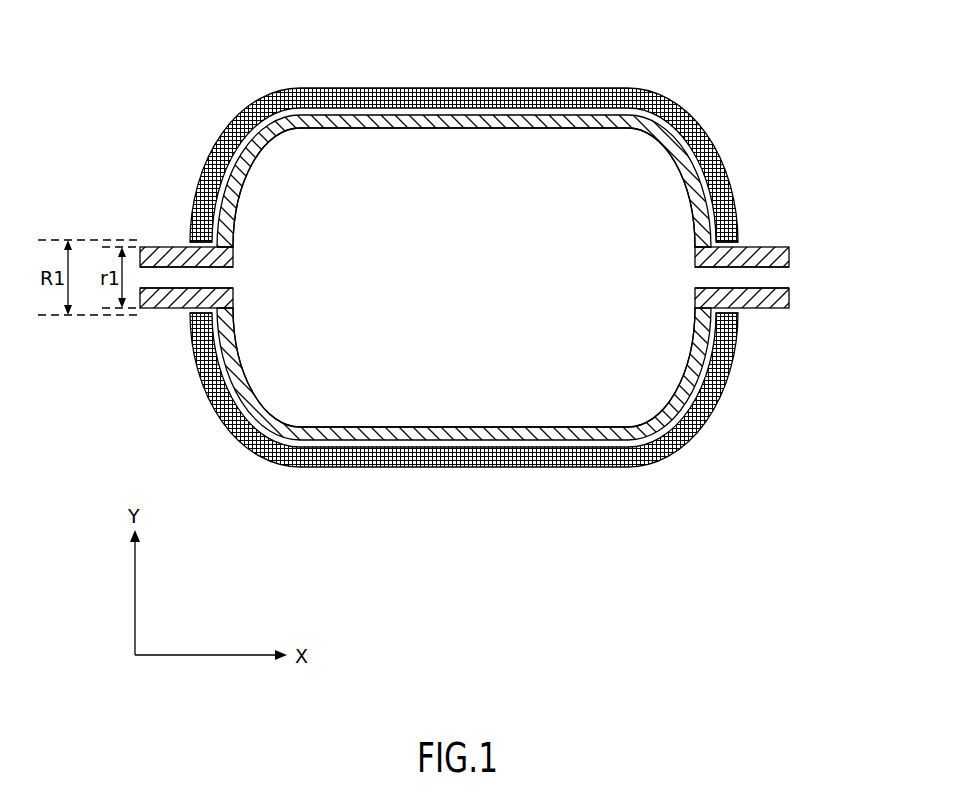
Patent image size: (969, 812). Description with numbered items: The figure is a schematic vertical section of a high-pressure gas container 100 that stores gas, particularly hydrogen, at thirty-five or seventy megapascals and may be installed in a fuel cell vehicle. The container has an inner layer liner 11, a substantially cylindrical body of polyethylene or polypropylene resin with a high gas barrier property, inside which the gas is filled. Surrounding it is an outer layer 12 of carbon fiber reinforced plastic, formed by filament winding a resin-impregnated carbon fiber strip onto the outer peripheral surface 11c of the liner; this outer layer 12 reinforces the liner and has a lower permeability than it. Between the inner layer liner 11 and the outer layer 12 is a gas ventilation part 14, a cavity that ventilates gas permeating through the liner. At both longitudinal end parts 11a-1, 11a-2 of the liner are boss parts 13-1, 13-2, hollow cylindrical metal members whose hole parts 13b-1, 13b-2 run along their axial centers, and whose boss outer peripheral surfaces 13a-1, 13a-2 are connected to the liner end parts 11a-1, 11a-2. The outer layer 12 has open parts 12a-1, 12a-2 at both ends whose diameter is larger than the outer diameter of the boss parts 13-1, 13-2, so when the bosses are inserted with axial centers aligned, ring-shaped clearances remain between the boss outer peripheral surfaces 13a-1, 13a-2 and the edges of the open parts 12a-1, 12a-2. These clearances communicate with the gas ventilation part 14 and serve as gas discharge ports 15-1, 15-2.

The high-pressure gas container 100 is at (465, 240).
The inner layer liner 11 is at (464, 235).
The end part of the inner layer liner 11a-1 is at (234, 238).
The end part of the inner layer liner 11a-2 is at (697, 238).
The outer peripheral surface of the inner layer liner 11c is at (485, 118).
The outer layer 12 is at (464, 240).
The open part 12a-1 is at (192, 242).
The open part 12a-2 is at (740, 242).
The boss part 13-1 is at (196, 270).
The boss part 13-2 is at (729, 270).
The boss outer peripheral surface 13a-1 is at (150, 247).
The boss outer peripheral surface 13a-2 is at (777, 247).
The hole part 13b-1 is at (217, 278).
The hole part 13b-2 is at (707, 278).
The gas ventilation part 14 is at (384, 108).
The gas discharge port 15-1 is at (198, 314).
The gas discharge port 15-2 is at (735, 314).